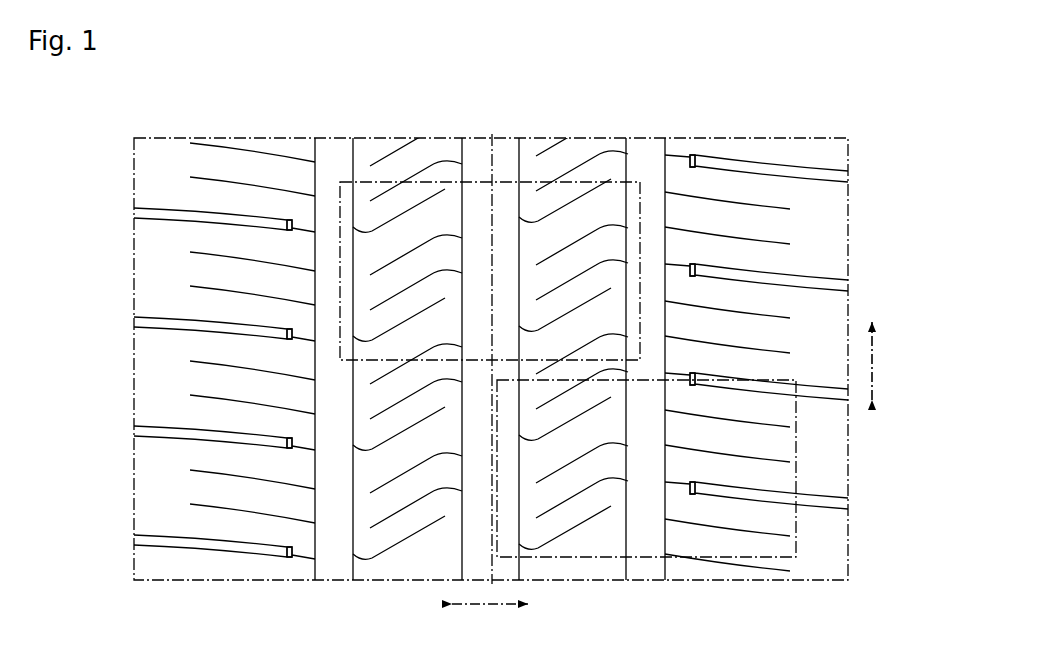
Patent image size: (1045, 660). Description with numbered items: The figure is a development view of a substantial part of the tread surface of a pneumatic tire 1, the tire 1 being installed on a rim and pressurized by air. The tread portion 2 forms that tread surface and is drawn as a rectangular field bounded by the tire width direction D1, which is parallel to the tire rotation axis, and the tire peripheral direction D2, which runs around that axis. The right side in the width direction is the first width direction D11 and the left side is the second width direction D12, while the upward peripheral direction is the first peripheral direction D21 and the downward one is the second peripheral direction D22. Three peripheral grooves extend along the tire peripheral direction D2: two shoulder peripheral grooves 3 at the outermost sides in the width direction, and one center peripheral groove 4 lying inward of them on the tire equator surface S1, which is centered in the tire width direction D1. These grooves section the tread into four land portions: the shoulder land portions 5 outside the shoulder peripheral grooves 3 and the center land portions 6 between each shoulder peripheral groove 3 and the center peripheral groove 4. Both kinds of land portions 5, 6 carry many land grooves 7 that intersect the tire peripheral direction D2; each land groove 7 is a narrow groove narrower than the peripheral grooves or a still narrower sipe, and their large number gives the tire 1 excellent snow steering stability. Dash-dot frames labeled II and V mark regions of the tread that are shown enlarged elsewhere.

The pneumatic tire 1 is at (888, 74).
The tread portion 2 is at (826, 146).
The shoulder peripheral groove 3 is at (334, 136).
The center peripheral groove 4 is at (503, 136).
The tire equator surface S1 is at (473, 138).
The shoulder land portion 5 is at (246, 136).
The center land portion 6 is at (402, 136).
The land groove 7 is at (289, 236).
The enlarged region II is at (348, 364).
The enlarged region V is at (780, 560).
The tire width direction D1 is at (490, 614).
The first width direction D11 is at (549, 604).
The second width direction D12 is at (435, 604).
The tire peripheral direction D2 is at (884, 361).
The first peripheral direction D21 is at (872, 308).
The second peripheral direction D22 is at (873, 410).